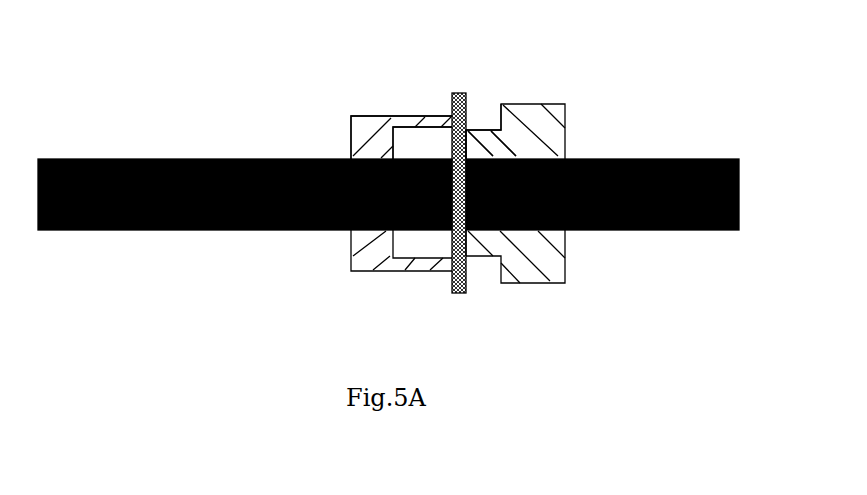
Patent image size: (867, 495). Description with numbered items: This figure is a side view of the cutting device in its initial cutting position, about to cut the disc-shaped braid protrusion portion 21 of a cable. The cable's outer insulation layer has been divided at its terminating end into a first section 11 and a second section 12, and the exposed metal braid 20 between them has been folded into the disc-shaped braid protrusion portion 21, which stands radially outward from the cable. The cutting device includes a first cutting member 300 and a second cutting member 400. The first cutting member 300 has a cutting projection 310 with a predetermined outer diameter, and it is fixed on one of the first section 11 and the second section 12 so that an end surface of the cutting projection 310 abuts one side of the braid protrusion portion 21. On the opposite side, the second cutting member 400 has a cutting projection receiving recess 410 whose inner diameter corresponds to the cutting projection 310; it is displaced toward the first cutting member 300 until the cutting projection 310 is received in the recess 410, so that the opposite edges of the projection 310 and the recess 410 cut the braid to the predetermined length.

The second section 12 is at (220, 223).
The first section 11 is at (643, 224).
The second cutting member 400 is at (355, 253).
The cutting projection receiving recess 410 is at (406, 108).
The first cutting member 300 is at (548, 265).
The cutting projection 310 is at (474, 122).
The metal braid 20 is at (496, 219).
The disc-shaped braid protrusion portion 21 is at (458, 285).